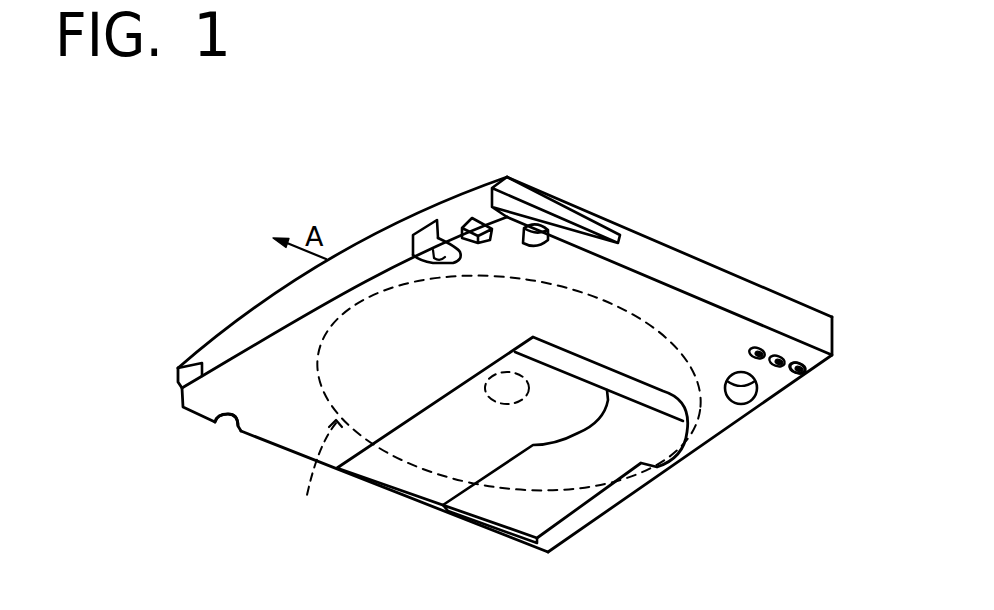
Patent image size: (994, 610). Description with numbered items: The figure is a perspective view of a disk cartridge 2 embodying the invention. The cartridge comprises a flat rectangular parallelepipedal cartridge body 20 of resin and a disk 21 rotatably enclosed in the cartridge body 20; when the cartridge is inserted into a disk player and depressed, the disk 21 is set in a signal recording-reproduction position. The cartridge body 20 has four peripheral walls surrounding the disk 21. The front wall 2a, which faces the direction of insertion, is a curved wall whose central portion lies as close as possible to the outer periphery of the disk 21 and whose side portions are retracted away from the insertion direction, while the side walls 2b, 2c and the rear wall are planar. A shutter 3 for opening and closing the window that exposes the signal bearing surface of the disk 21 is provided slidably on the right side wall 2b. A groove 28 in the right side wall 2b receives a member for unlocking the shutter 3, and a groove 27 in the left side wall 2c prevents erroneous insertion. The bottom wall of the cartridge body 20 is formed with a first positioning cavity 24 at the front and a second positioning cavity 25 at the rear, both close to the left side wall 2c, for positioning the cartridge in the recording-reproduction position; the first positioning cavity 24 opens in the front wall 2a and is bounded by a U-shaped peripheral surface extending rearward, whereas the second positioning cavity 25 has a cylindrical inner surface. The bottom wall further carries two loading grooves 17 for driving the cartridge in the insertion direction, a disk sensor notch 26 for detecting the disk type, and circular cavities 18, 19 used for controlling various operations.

The disk cartridge 2 is at (725, 268).
The front wall 2a is at (386, 245).
The right side wall 2b is at (257, 457).
The left side wall 2c is at (668, 268).
The shutter 3 is at (396, 483).
The loading grooves 17 is at (546, 246).
The circular cavities 18 is at (765, 349).
The circular cavity 19 is at (805, 373).
The cartridge body 20 is at (763, 300).
The disk 21 is at (508, 393).
The first positioning cavity 24 is at (436, 251).
The second positioning cavity 25 is at (742, 395).
The disk sensor notch 26 is at (481, 224).
The groove 27 is at (581, 226).
The groove 28 is at (182, 388).